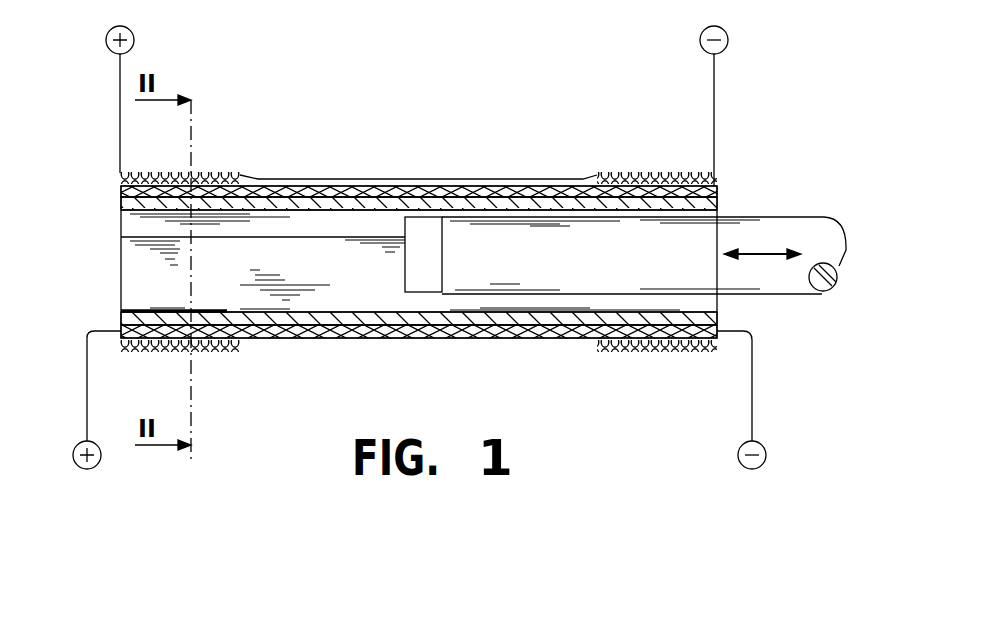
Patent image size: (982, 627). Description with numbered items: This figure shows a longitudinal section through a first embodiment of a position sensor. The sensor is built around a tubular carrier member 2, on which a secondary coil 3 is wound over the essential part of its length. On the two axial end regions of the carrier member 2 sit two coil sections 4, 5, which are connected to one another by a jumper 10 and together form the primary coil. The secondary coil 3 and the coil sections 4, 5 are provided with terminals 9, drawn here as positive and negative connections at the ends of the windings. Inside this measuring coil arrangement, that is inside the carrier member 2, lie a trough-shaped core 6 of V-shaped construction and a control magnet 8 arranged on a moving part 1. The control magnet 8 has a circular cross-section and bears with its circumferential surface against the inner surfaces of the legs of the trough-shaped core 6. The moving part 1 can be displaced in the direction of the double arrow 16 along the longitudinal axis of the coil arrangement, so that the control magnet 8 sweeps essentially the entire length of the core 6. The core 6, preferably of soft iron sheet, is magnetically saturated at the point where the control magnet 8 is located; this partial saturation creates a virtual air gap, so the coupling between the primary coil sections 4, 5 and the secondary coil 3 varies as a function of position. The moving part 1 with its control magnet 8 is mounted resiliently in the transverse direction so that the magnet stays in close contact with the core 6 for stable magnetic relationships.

The moving part 1 is at (742, 216).
The tubular carrier member 2 is at (325, 196).
The secondary coil 3 is at (352, 338).
The coil section 4 is at (217, 354).
The coil section 5 is at (668, 352).
The trough-shaped core 6 is at (126, 277).
The control magnet 8 is at (428, 233).
The terminals 9 is at (119, 27).
The jumper 10 is at (500, 179).
The double arrow 16 is at (762, 268).